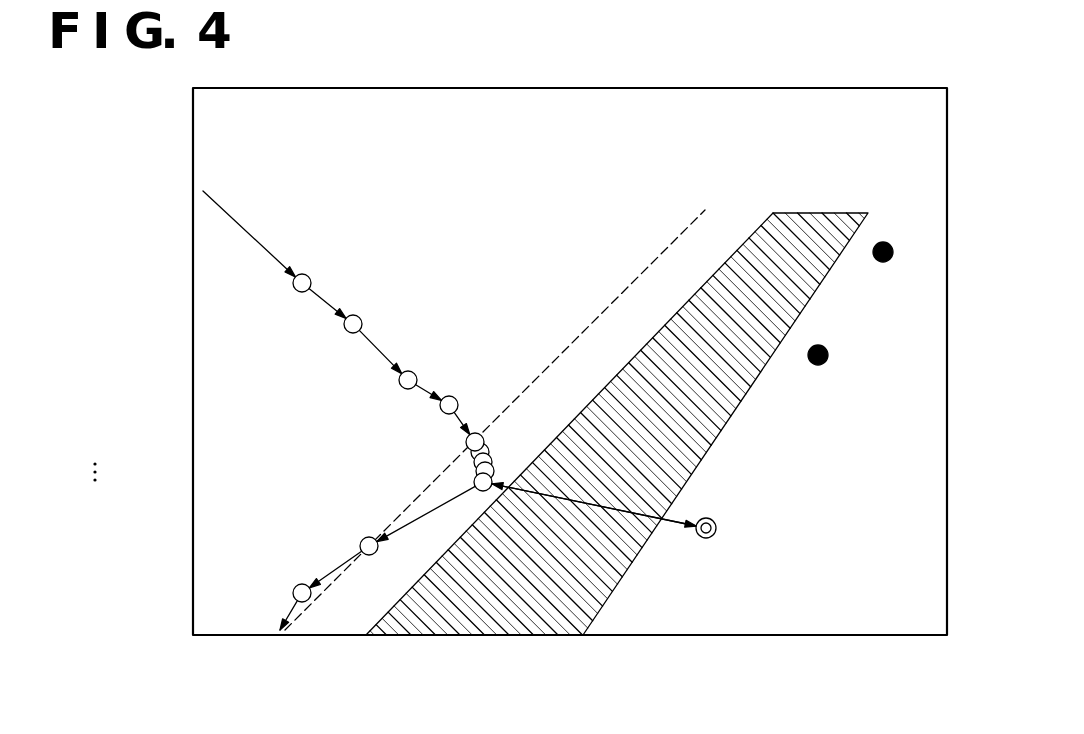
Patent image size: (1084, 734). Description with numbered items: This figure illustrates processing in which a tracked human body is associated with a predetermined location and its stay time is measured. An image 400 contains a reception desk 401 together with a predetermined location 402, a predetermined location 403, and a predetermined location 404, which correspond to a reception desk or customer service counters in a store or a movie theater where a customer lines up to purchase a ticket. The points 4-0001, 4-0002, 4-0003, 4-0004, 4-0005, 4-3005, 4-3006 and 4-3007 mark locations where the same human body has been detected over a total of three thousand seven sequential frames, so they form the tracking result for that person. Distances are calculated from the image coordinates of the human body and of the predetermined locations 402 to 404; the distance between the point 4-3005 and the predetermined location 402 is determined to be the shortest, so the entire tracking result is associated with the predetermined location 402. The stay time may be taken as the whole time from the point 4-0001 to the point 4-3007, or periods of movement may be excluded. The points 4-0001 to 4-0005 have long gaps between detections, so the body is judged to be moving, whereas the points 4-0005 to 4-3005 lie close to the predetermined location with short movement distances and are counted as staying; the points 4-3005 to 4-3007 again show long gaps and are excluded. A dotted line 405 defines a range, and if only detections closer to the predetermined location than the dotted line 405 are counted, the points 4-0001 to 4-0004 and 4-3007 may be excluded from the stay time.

The image 400 is at (460, 88).
The reception desk 401 is at (803, 213).
The predetermined location 402 is at (713, 519).
The predetermined location 403 is at (824, 346).
The predetermined location 404 is at (888, 243).
The dotted line 405 is at (618, 298).
The point 4-0001 is at (293, 285).
The point 4-0002 is at (344, 326).
The point 4-0003 is at (399, 382).
The point 4-0004 is at (440, 407).
The point 4-0005 is at (466, 441).
The point 4-3005 is at (474, 481).
The point 4-3006 is at (360, 545).
The point 4-3007 is at (293, 592).